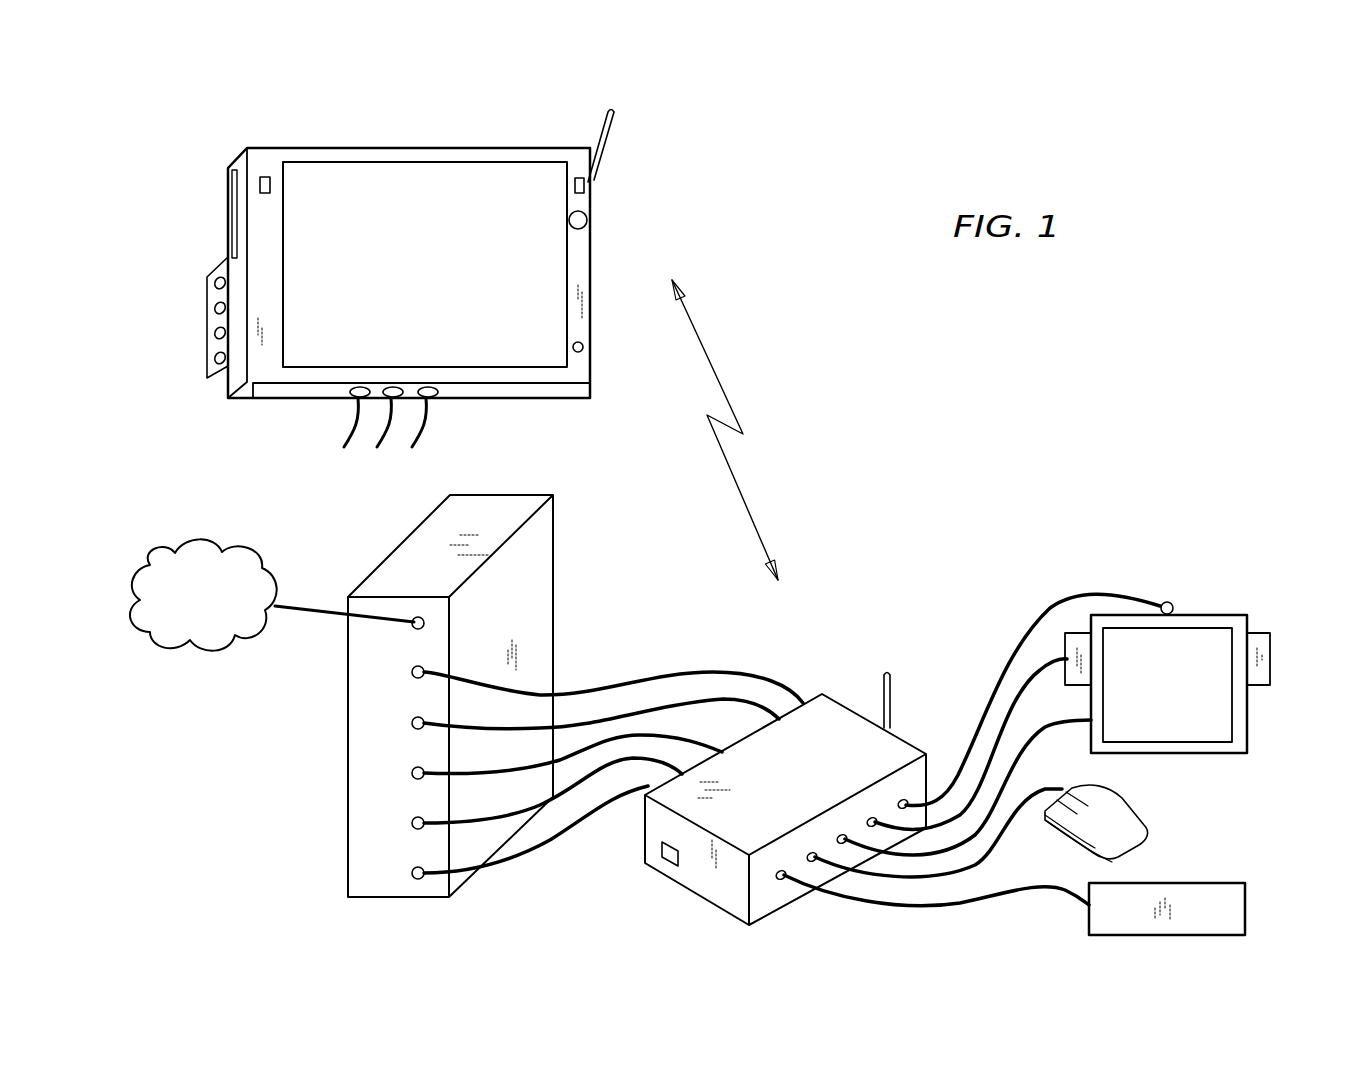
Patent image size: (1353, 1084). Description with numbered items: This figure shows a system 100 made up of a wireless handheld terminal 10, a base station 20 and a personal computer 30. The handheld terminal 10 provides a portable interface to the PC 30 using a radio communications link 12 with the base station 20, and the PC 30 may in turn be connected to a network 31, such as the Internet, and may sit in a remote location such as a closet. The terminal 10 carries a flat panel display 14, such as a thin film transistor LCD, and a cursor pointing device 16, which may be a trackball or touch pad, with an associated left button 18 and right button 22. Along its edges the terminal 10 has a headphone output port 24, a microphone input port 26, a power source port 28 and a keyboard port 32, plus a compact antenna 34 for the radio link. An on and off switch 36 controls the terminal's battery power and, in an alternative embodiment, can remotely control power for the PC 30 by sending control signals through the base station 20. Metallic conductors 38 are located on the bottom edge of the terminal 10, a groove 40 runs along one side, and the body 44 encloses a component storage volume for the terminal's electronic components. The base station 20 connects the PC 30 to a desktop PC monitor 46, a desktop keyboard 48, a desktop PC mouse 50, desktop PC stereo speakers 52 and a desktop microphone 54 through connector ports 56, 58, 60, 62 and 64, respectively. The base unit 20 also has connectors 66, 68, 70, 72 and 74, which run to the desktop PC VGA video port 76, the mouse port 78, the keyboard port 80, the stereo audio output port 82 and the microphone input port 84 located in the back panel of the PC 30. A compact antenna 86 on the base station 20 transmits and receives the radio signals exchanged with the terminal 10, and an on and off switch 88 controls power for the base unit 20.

The system 100 is at (958, 387).
The wireless handheld terminal 10 is at (541, 377).
The radio communications link 12 is at (718, 382).
The flat panel display 14 is at (487, 342).
The cursor pointing device 16 is at (590, 222).
The left button 18 is at (265, 176).
The base station 20 is at (727, 913).
The right button 22 is at (585, 186).
The headphone output port 24 is at (214, 285).
The microphone input port 26 is at (214, 308).
The power source port 28 is at (214, 333).
The personal computer 30 is at (555, 540).
The network 31 is at (243, 563).
The keyboard port 32 is at (214, 358).
The compact antenna 34 is at (602, 124).
The on and off switch 36 is at (583, 355).
The metallic conductors 38 is at (343, 455).
The groove 40 is at (232, 207).
The body 44 is at (220, 383).
The desktop PC monitor 46 is at (1218, 720).
The desktop keyboard 48 is at (1218, 882).
The desktop PC mouse 50 is at (1122, 801).
The desktop PC stereo speakers 52 is at (1075, 632).
The desktop microphone 54 is at (1172, 606).
The connector port 56 is at (842, 833).
The connector port 58 is at (784, 882).
The connector port 60 is at (808, 851).
The connector port 62 is at (870, 816).
The connector port 64 is at (907, 798).
The connector 66 is at (785, 683).
The connector 68 is at (727, 698).
The connector 70 is at (655, 735).
The connector 72 is at (502, 820).
The connector 74 is at (603, 805).
The desktop PC VGA video port 76 is at (411, 672).
The mouse port 78 is at (411, 723).
The keyboard port 80 is at (411, 773).
The stereo audio output port 82 is at (411, 823).
The microphone input port 84 is at (411, 873).
The compact antenna 86 is at (883, 690).
The on and off switch 88 is at (668, 864).